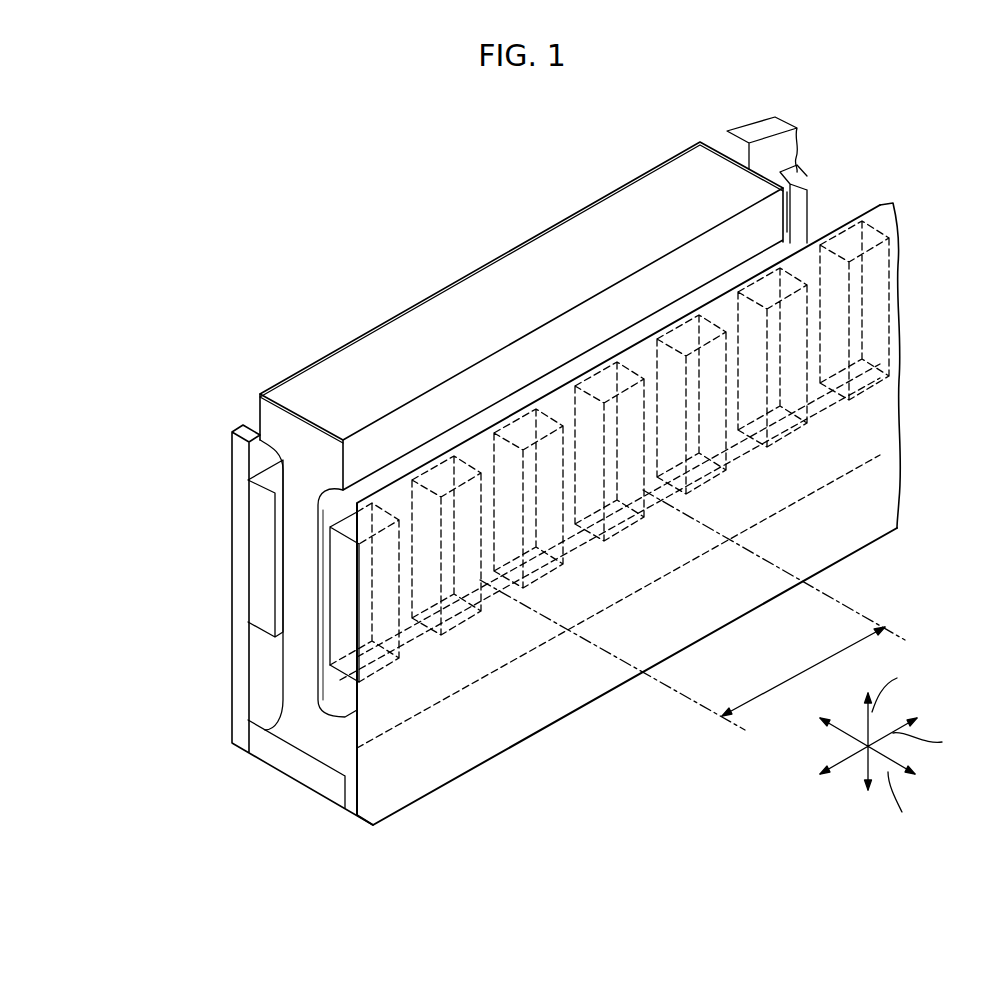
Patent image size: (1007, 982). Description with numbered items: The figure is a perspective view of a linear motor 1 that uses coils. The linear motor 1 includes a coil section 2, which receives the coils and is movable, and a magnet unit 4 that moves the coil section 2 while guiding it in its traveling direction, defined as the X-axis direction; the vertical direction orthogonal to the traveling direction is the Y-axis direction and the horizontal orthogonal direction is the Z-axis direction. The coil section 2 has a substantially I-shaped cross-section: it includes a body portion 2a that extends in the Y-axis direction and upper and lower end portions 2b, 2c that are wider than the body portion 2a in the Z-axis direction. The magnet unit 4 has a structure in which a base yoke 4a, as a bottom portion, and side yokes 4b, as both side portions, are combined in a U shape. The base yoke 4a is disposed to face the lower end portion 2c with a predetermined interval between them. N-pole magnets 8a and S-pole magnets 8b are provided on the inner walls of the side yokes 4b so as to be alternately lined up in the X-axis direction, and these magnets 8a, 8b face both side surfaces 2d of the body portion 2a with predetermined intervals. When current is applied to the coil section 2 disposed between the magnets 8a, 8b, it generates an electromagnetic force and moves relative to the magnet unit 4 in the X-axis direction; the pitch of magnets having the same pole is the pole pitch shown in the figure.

The linear motor 1 is at (337, 202).
The coil section 2 is at (307, 343).
The body portion 2a is at (348, 496).
The upper end portion 2b is at (290, 398).
The lower end portion 2c is at (312, 753).
The side surfaces 2d is at (330, 512).
The magnet unit 4 is at (222, 653).
The base yoke 4a is at (262, 752).
The side yokes 4b is at (240, 532).
The N-pole magnets 8a is at (262, 565).
The S-pole magnets 8b is at (337, 600).